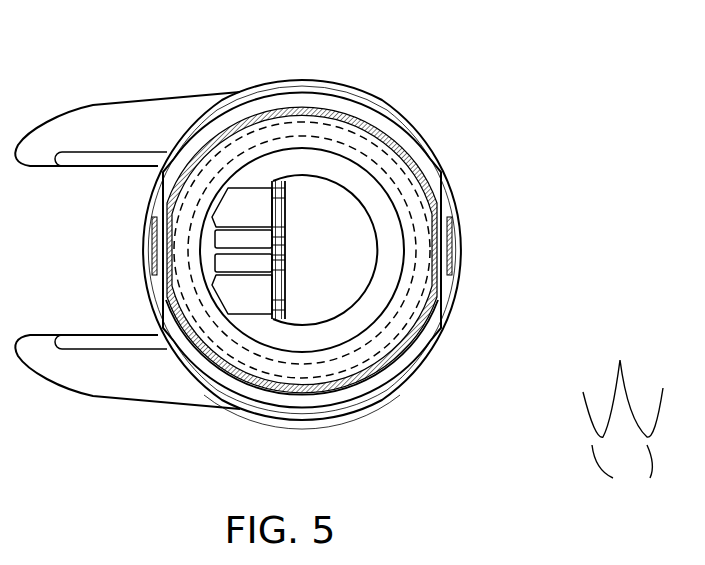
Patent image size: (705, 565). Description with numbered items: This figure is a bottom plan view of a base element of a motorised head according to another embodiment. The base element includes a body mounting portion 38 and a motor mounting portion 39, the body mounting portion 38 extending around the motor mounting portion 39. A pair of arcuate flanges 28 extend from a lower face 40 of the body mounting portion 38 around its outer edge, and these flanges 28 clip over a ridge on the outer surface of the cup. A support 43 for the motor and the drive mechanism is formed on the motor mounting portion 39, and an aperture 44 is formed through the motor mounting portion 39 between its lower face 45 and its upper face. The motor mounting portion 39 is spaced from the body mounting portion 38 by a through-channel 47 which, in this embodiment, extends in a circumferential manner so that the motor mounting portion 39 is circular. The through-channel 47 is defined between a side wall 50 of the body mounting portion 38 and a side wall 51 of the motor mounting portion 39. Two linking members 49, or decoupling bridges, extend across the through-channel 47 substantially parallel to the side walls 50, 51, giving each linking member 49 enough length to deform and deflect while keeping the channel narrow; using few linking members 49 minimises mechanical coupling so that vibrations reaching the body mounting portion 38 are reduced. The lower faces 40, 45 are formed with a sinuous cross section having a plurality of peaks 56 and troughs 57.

The arcuate flange 28 is at (412, 123).
The body mounting portion 38 is at (208, 368).
The motor mounting portion 39 is at (248, 358).
The lower face 40 is at (362, 388).
The support 43 is at (267, 278).
The aperture 44 is at (318, 258).
The lower face 45 is at (305, 130).
The through-channel 47 is at (348, 120).
The linking member 49 is at (163, 238).
The side wall 50 is at (277, 393).
The side wall 51 is at (323, 397).
The peak 56 is at (375, 348).
The trough 57 is at (410, 325).